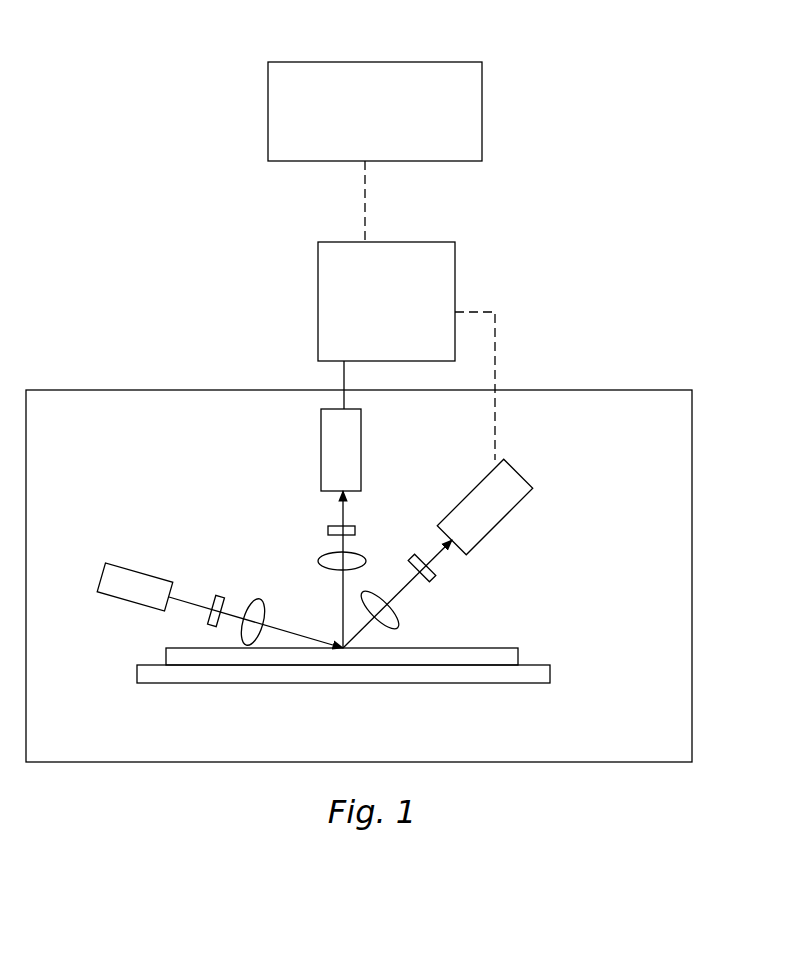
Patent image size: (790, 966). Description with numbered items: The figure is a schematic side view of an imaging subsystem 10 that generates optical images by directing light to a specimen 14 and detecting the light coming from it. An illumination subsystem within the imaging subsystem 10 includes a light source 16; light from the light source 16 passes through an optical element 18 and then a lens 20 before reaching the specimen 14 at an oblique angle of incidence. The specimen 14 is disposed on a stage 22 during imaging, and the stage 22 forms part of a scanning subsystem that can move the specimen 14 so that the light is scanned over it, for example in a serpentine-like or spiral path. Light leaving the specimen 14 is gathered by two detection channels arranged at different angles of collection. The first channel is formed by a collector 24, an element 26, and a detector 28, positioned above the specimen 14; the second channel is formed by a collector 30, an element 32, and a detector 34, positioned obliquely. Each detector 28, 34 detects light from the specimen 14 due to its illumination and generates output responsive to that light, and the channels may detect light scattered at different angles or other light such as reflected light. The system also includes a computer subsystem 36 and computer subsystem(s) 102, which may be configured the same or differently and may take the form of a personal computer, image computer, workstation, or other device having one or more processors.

The imaging subsystem 10 is at (373, 559).
The specimen 14 is at (318, 644).
The light source 16 is at (110, 577).
The optical element 18 is at (239, 591).
The lens 20 is at (257, 600).
The stage 22 is at (314, 667).
The collector 24 is at (315, 549).
The element 26 is at (312, 518).
The detector 28 is at (311, 450).
The collector 30 is at (404, 619).
The element 32 is at (449, 582).
The detector 34 is at (502, 506).
The computer subsystem 36 is at (386, 301).
The computer subsystem(s) 102 is at (375, 111).